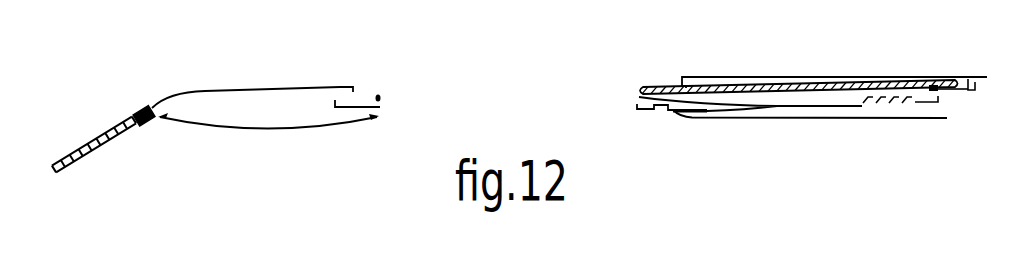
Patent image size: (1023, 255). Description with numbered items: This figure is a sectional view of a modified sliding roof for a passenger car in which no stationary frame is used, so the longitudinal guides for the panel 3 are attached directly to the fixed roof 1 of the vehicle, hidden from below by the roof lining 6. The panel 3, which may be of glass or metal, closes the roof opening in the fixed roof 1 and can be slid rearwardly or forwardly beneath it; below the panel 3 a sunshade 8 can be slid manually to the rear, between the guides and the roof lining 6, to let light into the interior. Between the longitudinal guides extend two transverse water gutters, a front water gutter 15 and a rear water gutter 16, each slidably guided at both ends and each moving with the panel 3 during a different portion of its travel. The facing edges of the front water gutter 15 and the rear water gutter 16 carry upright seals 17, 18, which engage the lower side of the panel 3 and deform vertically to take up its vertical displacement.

The fixed roof 1 is at (247, 90).
The panel 3 is at (812, 85).
The roof lining 6 is at (267, 128).
The sunshade 8 is at (777, 106).
The front water gutter 15 is at (342, 107).
The rear water gutter 16 is at (968, 80).
The upright seal 17 is at (380, 107).
The upright seal 18 is at (934, 86).